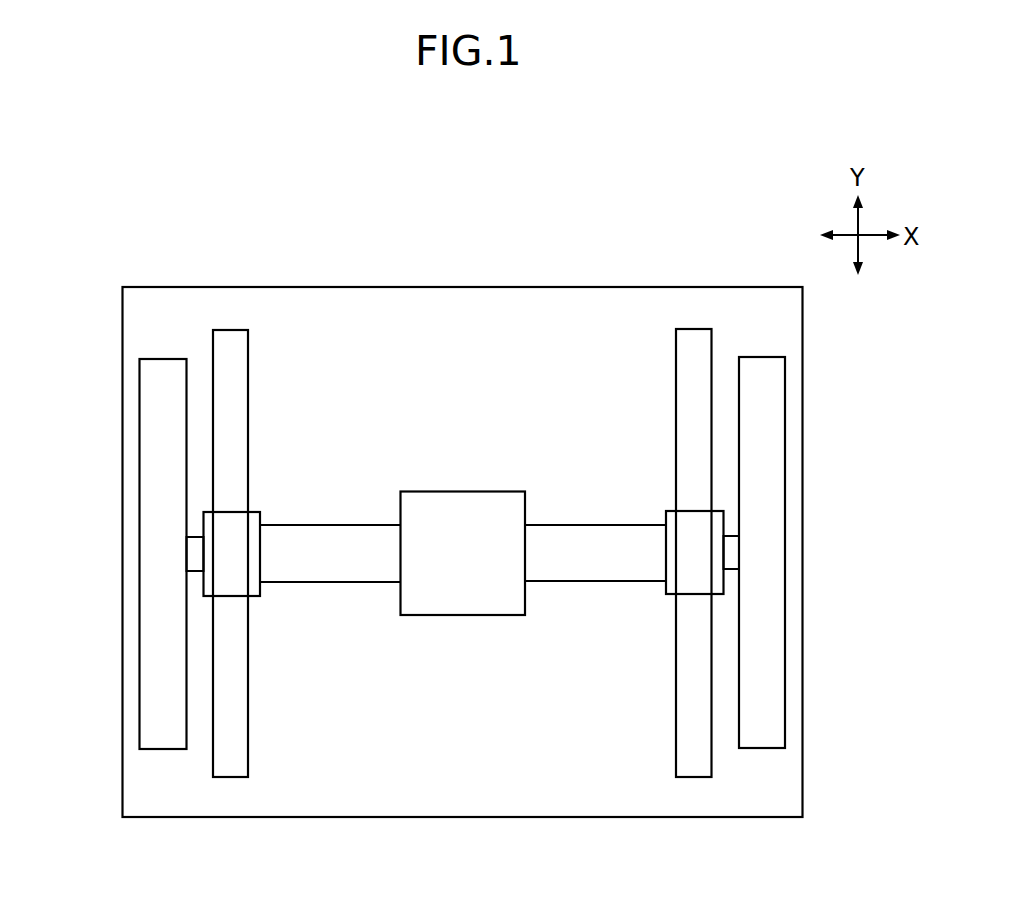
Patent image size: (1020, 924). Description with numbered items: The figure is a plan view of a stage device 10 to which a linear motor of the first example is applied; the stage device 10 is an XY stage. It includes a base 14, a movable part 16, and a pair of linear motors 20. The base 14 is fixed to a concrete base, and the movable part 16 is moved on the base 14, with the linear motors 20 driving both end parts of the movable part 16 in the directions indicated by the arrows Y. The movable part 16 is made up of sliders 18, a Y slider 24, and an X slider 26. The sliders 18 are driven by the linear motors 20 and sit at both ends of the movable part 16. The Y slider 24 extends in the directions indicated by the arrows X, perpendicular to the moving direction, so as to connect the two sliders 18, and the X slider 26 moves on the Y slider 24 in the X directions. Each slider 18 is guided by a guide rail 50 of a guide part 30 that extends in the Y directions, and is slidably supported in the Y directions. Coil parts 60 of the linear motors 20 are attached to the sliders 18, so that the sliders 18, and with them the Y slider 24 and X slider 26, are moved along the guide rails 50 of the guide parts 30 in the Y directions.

The stage device 10 is at (463, 519).
The base 14 is at (547, 292).
The movable part 16 is at (475, 536).
The sliders 18 is at (208, 590).
The linear motors 20 is at (155, 650).
The Y slider 24 is at (327, 567).
The X slider 26 is at (440, 605).
The guide parts 30 is at (475, 560).
The guide rails 50 is at (233, 712).
The coil parts 60 is at (198, 550).